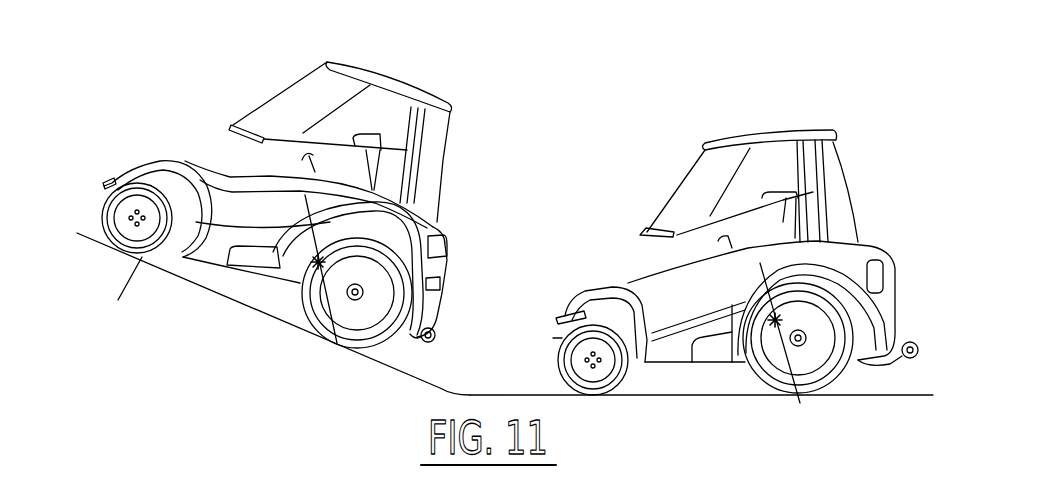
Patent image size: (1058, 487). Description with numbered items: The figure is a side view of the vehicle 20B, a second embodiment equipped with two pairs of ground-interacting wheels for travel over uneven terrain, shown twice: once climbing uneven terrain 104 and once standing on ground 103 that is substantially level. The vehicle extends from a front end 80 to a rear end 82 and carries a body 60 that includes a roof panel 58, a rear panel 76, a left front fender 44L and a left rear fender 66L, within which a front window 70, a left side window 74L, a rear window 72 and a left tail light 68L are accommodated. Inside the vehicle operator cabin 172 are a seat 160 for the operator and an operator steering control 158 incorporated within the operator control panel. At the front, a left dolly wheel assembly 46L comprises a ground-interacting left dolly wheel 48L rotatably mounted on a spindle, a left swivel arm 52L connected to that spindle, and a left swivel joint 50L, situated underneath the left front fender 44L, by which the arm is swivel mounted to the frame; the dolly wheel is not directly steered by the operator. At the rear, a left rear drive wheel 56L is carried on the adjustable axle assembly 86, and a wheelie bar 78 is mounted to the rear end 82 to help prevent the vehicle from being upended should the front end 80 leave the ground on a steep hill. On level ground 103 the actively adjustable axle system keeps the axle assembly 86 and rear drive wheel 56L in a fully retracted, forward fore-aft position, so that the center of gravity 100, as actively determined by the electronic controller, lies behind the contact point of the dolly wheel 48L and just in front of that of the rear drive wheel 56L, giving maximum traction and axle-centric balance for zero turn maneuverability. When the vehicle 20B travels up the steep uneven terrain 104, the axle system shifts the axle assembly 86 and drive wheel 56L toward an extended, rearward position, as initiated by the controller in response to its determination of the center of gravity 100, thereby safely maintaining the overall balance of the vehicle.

The vehicle 20B is at (180, 72).
The front end 80 is at (140, 118).
The left swivel arm 52L is at (123, 178).
The left swivel joint 50L is at (146, 176).
The left dolly wheel 48L is at (118, 300).
The left dolly wheel assembly 46L is at (92, 221).
The left front fender 44L is at (213, 191).
The left rear fender 66L is at (420, 233).
The rear panel 76 is at (448, 239).
The left tail light 68L is at (443, 266).
The wheelie bar 78 is at (437, 336).
The left rear drive wheel 56L is at (376, 352).
The adjustable axle assembly 86 is at (367, 312).
The center of gravity 100 is at (316, 264).
The front window 70 is at (287, 108).
The left side window 74L is at (437, 84).
The vehicle operator cabin 172 is at (295, 62).
The roof panel 58 is at (402, 110).
The body 60 is at (516, 74).
The rear window 72 is at (440, 125).
The seat 160 is at (368, 174).
The operator steering control 158 is at (307, 159).
The rear end 82 is at (456, 197).
The uneven terrain 104 is at (232, 294).
The ground 103 is at (541, 394).